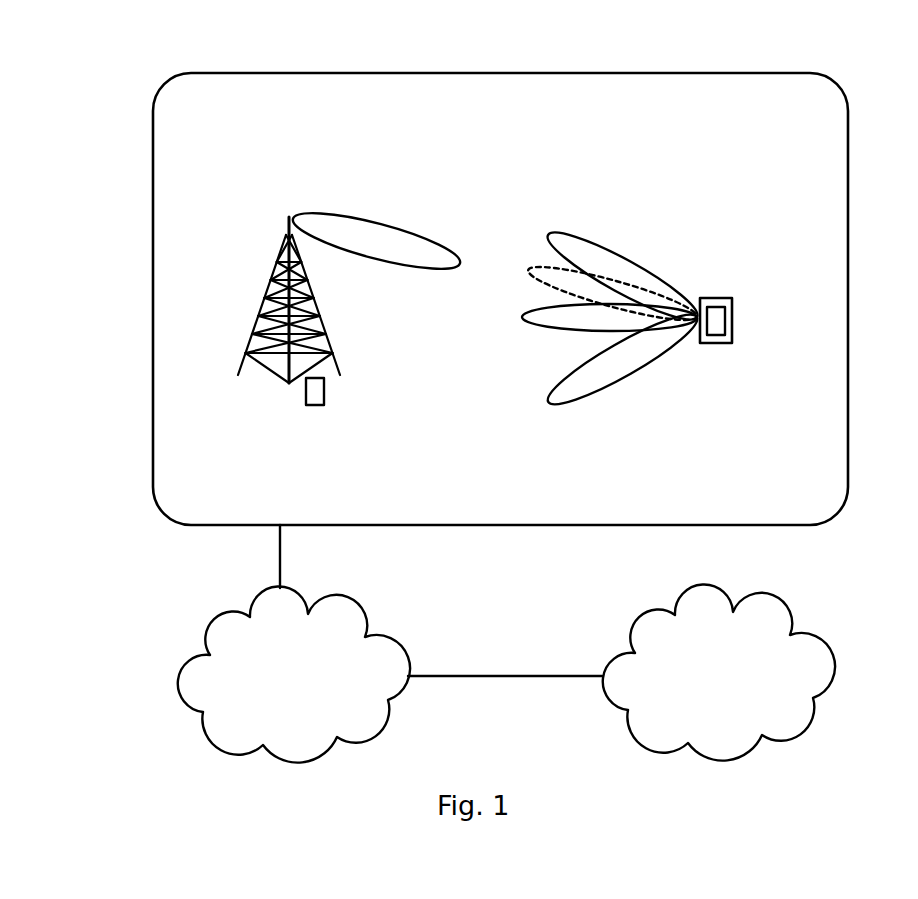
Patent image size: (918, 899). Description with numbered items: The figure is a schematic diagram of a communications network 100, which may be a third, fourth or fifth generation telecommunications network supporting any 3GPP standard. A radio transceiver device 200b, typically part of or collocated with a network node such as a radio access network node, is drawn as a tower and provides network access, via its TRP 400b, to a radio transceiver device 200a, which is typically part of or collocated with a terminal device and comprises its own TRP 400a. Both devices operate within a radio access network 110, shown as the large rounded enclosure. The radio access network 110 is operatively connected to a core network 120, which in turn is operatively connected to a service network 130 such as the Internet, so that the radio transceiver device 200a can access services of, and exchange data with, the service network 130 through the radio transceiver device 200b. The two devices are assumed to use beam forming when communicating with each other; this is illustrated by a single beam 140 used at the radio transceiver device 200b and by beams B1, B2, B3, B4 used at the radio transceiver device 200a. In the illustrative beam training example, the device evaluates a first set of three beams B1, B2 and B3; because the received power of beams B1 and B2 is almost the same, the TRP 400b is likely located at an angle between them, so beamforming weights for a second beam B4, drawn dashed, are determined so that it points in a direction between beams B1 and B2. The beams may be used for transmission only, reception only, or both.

The communications network 100 is at (140, 51).
The radio access network 110 is at (153, 421).
The core network 120 is at (320, 694).
The service network 130 is at (746, 692).
The beam 140 is at (343, 220).
The radio transceiver device 200a is at (716, 343).
The radio transceiver device 200b is at (305, 398).
The TRP 400a is at (732, 313).
The TRP 400b is at (288, 230).
The beam B1 is at (591, 244).
The beam B2 is at (522, 320).
The beam B3 is at (592, 390).
The second beam B4 is at (530, 270).